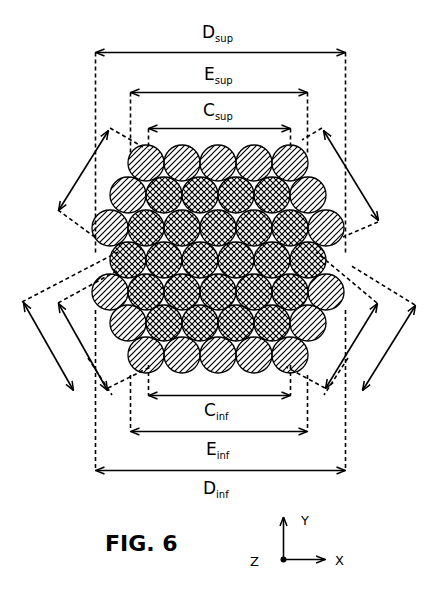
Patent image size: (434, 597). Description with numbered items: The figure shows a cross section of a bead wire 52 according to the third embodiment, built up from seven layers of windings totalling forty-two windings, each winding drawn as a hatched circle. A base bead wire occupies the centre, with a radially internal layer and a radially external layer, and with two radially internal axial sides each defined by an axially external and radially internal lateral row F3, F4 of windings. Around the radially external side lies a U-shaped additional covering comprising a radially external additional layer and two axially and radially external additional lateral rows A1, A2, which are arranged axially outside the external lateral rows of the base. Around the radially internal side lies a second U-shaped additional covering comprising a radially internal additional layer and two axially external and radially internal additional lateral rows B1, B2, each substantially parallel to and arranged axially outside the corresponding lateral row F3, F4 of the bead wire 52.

The bead wire 52 is at (376, 124).
The axially and radially external additional lateral row A1 is at (98, 183).
The axially and radially external additional lateral row A2 is at (340, 182).
The axially external and radially internal additional lateral row B1 is at (101, 329).
The axially external and radially internal additional lateral row B2 is at (333, 320).
The axially external and radially internal lateral row F3 is at (70, 321).
The axially external and radially internal lateral row F4 is at (383, 328).